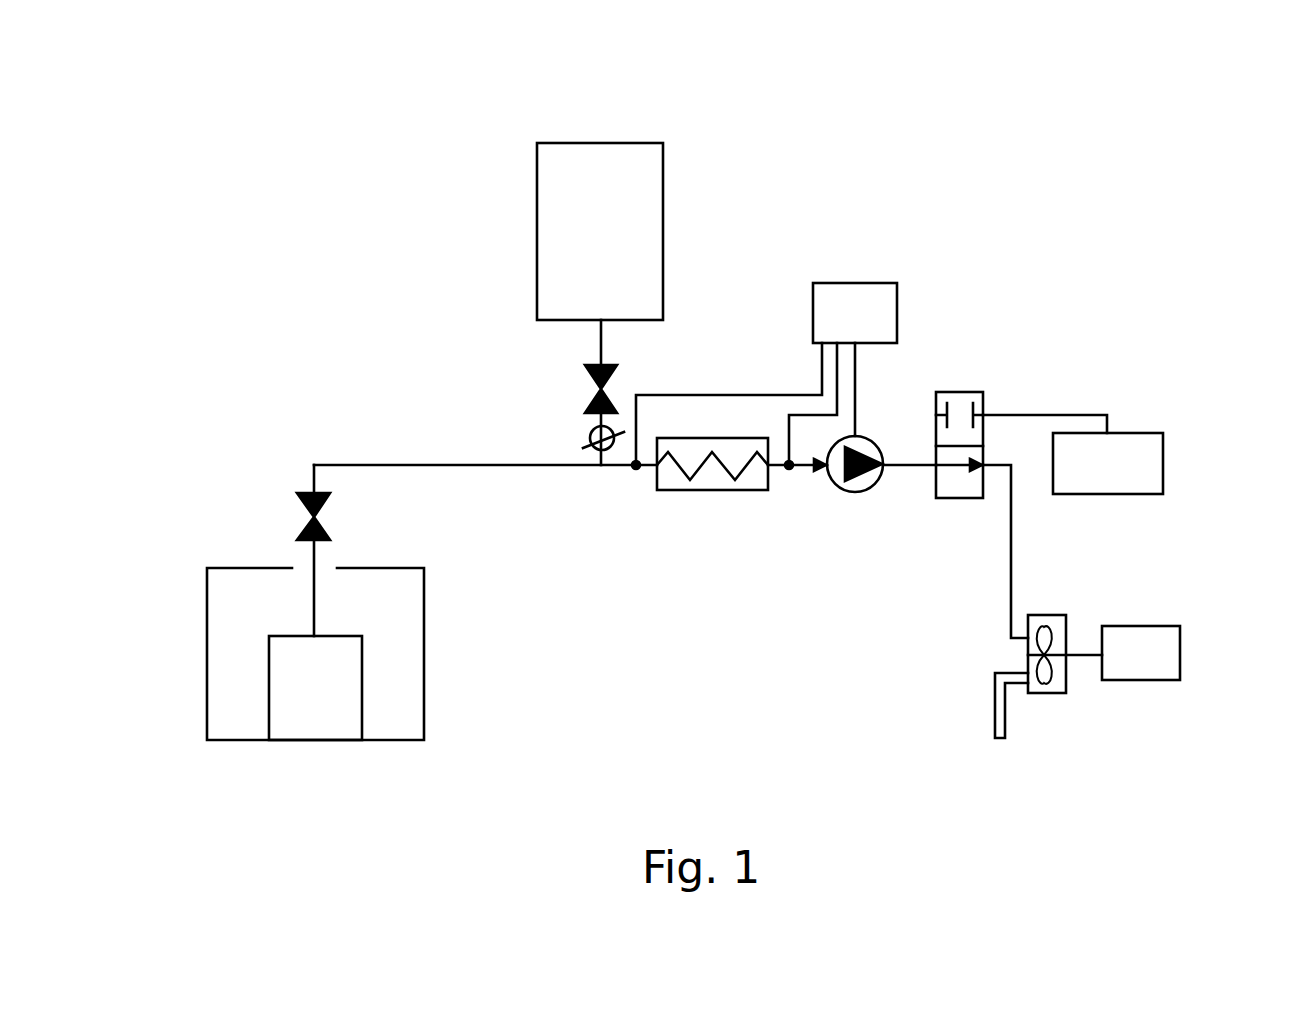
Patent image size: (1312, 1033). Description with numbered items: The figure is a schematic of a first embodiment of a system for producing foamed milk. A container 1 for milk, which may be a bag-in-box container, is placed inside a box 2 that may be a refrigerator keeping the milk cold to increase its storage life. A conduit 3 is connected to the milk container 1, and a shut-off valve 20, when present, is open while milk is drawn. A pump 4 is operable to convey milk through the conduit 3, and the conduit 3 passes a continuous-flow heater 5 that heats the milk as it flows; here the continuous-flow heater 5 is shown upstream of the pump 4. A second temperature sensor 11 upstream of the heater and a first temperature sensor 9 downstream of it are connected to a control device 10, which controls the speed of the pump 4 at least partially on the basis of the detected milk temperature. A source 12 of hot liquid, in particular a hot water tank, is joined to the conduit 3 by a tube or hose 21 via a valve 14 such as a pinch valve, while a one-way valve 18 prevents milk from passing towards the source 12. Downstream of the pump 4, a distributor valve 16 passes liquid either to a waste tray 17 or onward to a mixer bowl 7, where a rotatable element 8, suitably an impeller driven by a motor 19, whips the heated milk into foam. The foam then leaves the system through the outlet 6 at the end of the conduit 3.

The container 1 is at (314, 712).
The box 2 is at (424, 678).
The conduit 3 is at (433, 465).
The pump 4 is at (875, 484).
The continuous-flow heater 5 is at (712, 490).
The outlet 6 is at (997, 742).
The mixer bowl 7 is at (1052, 615).
The rotatable element 8 is at (1037, 657).
The first temperature sensor 9 is at (789, 470).
The control device 10 is at (835, 283).
The second temperature sensor 11 is at (636, 470).
The source of hot liquid 12 is at (602, 143).
The valve 14 is at (612, 378).
The distributor valve 16 is at (960, 392).
The waste tray 17 is at (1145, 470).
The one-way valve 18 is at (585, 437).
The motor 19 is at (1172, 662).
The shut-off valve 20 is at (298, 522).
The tube or hose 21 is at (600, 352).